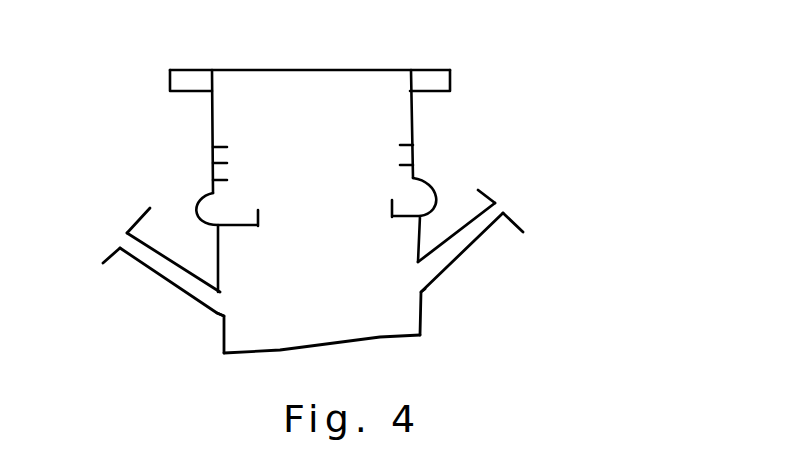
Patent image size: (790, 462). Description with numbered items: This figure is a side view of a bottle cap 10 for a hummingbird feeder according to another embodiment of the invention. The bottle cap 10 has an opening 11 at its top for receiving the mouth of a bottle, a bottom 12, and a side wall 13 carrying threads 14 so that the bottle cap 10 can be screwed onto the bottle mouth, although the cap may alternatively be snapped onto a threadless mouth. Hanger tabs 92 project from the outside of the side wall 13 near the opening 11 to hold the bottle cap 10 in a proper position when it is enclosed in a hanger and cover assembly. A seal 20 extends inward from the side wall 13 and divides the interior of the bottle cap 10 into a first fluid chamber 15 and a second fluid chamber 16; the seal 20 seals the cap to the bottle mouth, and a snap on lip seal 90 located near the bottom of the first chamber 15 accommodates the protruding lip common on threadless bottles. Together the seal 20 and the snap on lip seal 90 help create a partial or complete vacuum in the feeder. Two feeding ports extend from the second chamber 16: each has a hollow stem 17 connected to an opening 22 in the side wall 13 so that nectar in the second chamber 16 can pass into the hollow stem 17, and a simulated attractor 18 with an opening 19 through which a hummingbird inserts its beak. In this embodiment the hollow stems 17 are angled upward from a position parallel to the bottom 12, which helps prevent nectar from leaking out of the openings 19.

The bottle cap 10 is at (506, 107).
The opening 11 is at (312, 70).
The hanger tabs 92 is at (170, 70).
The side wall 13 is at (212, 133).
The threads 14 is at (424, 128).
The first fluid chamber 15 is at (312, 179).
The snap on lip seal 90 is at (440, 184).
The seal 20 is at (394, 221).
The hollow stem 17 is at (165, 293).
The simulated attractor 18 is at (150, 209).
The opening 19 is at (503, 208).
The opening 22 is at (228, 301).
The second fluid chamber 16 is at (312, 292).
The bottom 12 is at (391, 346).